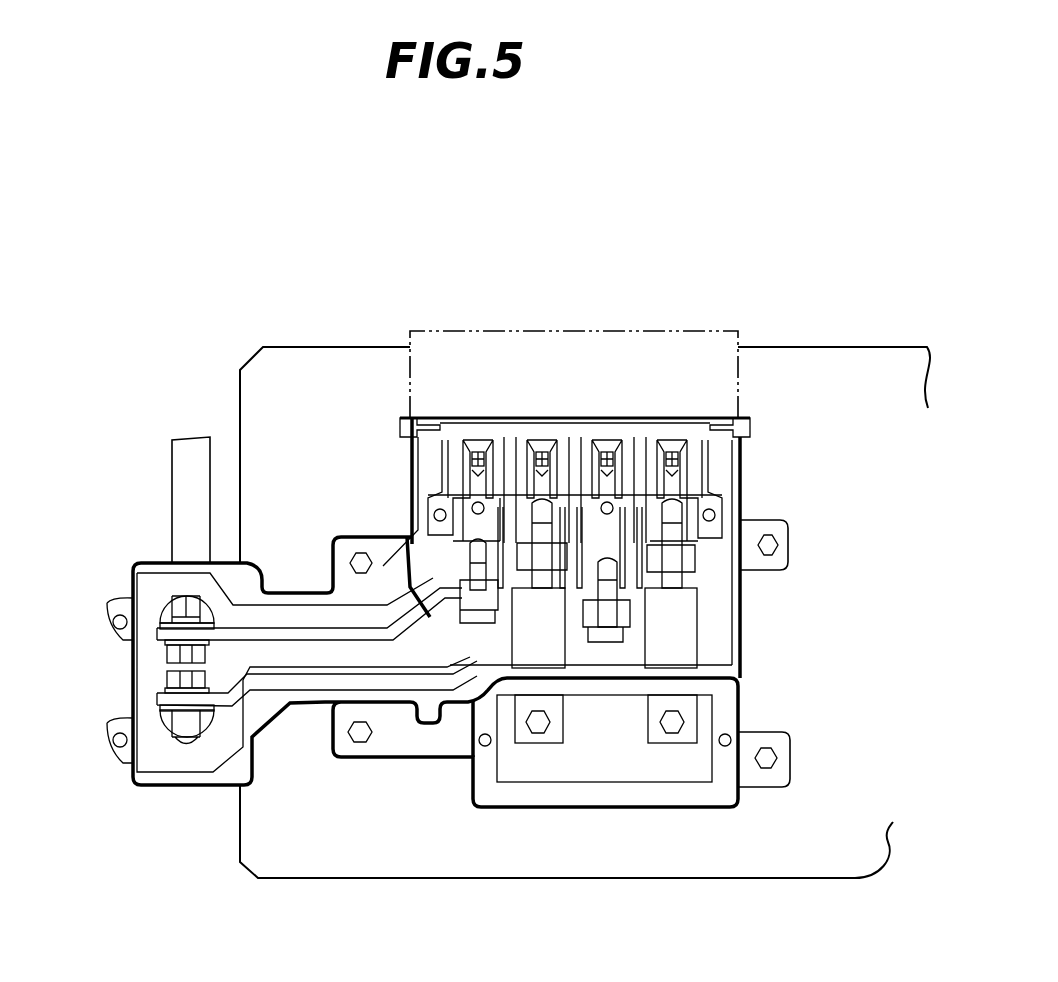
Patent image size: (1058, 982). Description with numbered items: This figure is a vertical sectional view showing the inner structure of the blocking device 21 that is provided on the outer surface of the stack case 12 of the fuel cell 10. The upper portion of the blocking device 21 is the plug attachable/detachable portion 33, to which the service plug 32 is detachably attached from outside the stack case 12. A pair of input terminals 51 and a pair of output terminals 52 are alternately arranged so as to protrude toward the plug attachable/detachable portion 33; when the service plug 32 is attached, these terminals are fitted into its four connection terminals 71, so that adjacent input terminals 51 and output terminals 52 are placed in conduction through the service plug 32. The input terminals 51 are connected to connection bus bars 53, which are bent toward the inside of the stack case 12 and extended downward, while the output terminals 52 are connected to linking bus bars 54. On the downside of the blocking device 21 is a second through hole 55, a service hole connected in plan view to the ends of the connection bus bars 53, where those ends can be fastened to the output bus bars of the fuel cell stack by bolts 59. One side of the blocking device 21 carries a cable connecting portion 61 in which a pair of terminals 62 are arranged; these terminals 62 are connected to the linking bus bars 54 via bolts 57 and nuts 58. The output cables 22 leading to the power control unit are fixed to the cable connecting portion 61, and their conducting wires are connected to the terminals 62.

The fuel cell 10 is at (313, 288).
The stack case 12 is at (303, 372).
The blocking device 21 is at (342, 798).
The output cables 22 is at (170, 530).
The service plug 32 is at (537, 353).
The plug attachable/detachable portion 33 is at (406, 428).
The input terminals 51 is at (452, 483).
The output terminals 52 is at (533, 478).
The connection bus bars 53 is at (527, 738).
The linking bus bars 54 is at (318, 632).
The second through hole 55 is at (612, 782).
The bolts 57 is at (173, 678).
The nuts 58 is at (177, 605).
The bolts 59 is at (545, 722).
The cable connecting portion 61 is at (134, 700).
The terminals 62 is at (163, 626).
The connection terminals 71 is at (563, 445).